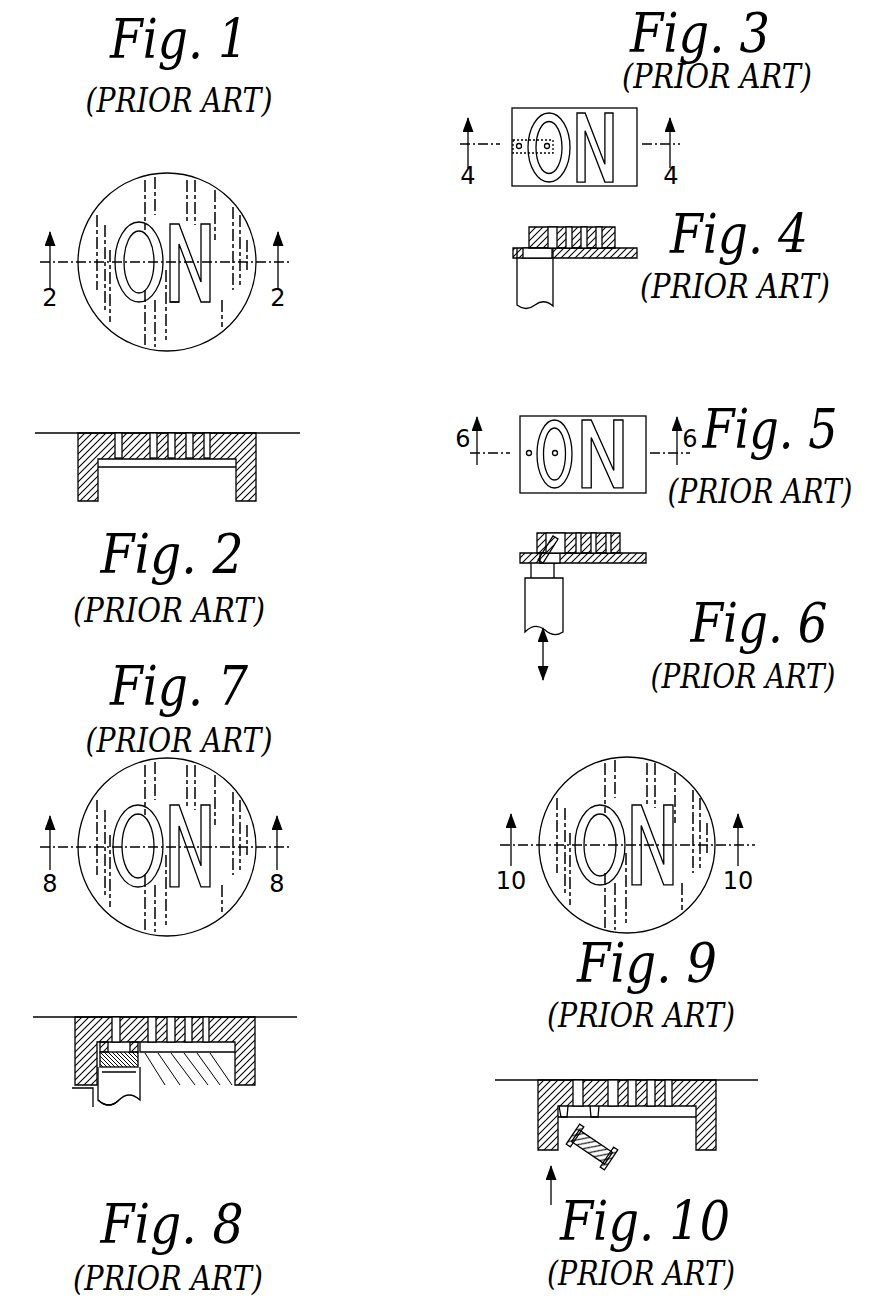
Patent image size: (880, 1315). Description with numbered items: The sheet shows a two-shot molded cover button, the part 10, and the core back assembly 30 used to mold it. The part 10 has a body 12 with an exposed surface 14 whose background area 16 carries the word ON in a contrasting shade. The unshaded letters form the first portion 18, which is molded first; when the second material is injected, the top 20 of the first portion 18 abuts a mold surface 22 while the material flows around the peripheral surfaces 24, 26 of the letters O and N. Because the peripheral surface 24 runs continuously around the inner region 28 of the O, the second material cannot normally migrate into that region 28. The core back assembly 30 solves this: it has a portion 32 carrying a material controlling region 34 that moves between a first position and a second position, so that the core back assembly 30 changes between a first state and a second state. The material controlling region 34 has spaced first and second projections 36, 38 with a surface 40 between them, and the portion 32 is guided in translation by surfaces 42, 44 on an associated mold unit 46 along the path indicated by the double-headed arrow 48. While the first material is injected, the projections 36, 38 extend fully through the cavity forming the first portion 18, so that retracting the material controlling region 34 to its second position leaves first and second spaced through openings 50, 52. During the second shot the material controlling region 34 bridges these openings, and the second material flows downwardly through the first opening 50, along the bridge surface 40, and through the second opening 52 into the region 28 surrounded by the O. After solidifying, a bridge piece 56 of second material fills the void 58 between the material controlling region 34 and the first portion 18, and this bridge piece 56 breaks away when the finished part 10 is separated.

In FIG. 1, the part 10 is at (302, 240).
In FIG. 2, the part 10 is at (282, 470).
In FIG. 7, the part 10 is at (258, 786).
In FIG. 8, the part 10 is at (270, 1001).
In FIG. 9, the part 10 is at (720, 786).
In FIG. 10, the part 10 is at (732, 1066).
In FIG. 1, the body 12 is at (245, 214).
In FIG. 2, the body 12 is at (245, 433).
In FIG. 1, the exposed surface 14 is at (182, 222).
In FIG. 2, the exposed surface 14 is at (95, 433).
In FIG. 1, the background area 16 is at (205, 320).
In FIG. 2, the first portion 18 is at (192, 468).
In FIG. 6, the first portion 18 is at (634, 565).
In FIG. 2, the top 20 is at (196, 433).
In FIG. 2, the mold surface 22 is at (58, 434).
In FIG. 1, the peripheral surface 24 is at (119, 276).
In FIG. 1, the peripheral surface 26 is at (197, 293).
In FIG. 1, the inner region 28 is at (150, 232).
In FIG. 5, the inner region 28 is at (562, 458).
In FIG. 6, the inner region 28 is at (553, 532).
In FIG. 8, the inner region 28 is at (135, 1013).
In FIG. 10, the inner region 28 is at (595, 1074).
In FIG. 3, the core back assembly 30 is at (512, 158).
In FIG. 4, the core back assembly 30 is at (524, 284).
In FIG. 6, the core back assembly 30 is at (525, 610).
In FIG. 8, the core back assembly 30 is at (113, 1099).
In FIG. 4, the portion 32 is at (544, 277).
In FIG. 6, the portion 32 is at (556, 606).
In FIG. 8, the portion 32 is at (140, 1083).
In FIG. 3, the material controlling region 34 is at (532, 158).
In FIG. 4, the material controlling region 34 is at (542, 246).
In FIG. 6, the material controlling region 34 is at (540, 550).
In FIG. 3, the first projection 36 is at (520, 143).
In FIG. 6, the first projection 36 is at (538, 572).
In FIG. 3, the second projection 38 is at (548, 143).
In FIG. 6, the second projection 38 is at (556, 572).
In FIG. 4, the surface 40 is at (530, 240).
In FIG. 6, the surface 40 is at (522, 558).
In FIG. 8, the surface 42 is at (120, 1100).
In FIG. 8, the surface 44 is at (135, 1078).
In FIG. 8, the mold unit 46 is at (195, 1068).
In FIG. 6, the double-headed arrow 48 is at (546, 650).
In FIG. 5, the first opening 50 is at (529, 450).
In FIG. 6, the first opening 50 is at (528, 555).
In FIG. 5, the second opening 52 is at (555, 450).
In FIG. 6, the second opening 52 is at (593, 532).
In FIG. 8, the bridge piece 56 is at (103, 1048).
In FIG. 10, the bridge piece 56 is at (613, 1152).
In FIG. 6, the void 58 is at (540, 533).